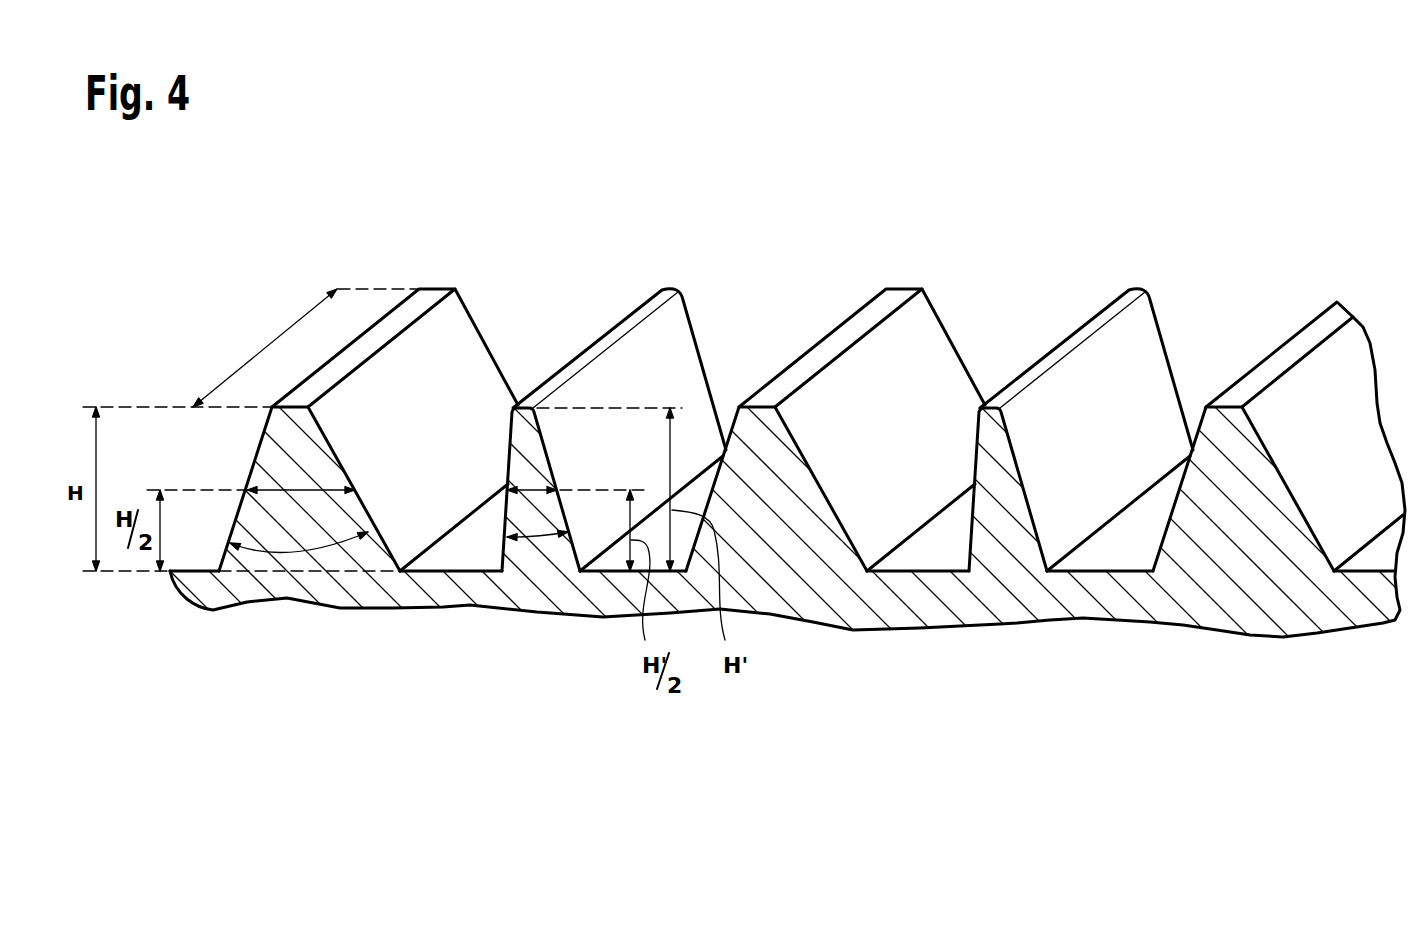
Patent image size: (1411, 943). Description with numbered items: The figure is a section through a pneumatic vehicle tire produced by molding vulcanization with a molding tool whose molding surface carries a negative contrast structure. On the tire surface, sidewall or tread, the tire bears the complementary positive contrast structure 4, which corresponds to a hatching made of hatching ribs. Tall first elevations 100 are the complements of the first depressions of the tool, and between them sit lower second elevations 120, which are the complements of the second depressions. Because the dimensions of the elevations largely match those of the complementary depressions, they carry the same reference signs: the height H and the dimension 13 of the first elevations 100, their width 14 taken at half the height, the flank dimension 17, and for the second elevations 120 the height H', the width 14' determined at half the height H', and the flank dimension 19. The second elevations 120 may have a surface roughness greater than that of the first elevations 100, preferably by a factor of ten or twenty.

The positive contrast structure 4 is at (392, 278).
The dimension reference sign of the elevations 13 is at (267, 343).
The width of the first elevation 14 is at (251, 380).
The width of the second elevation 14' is at (576, 399).
The dimension reference sign of the first elevation 17 is at (303, 550).
The dimension reference sign of the second elevation 19 is at (548, 548).
The first elevation 100 is at (428, 300).
The second elevation 120 is at (620, 350).